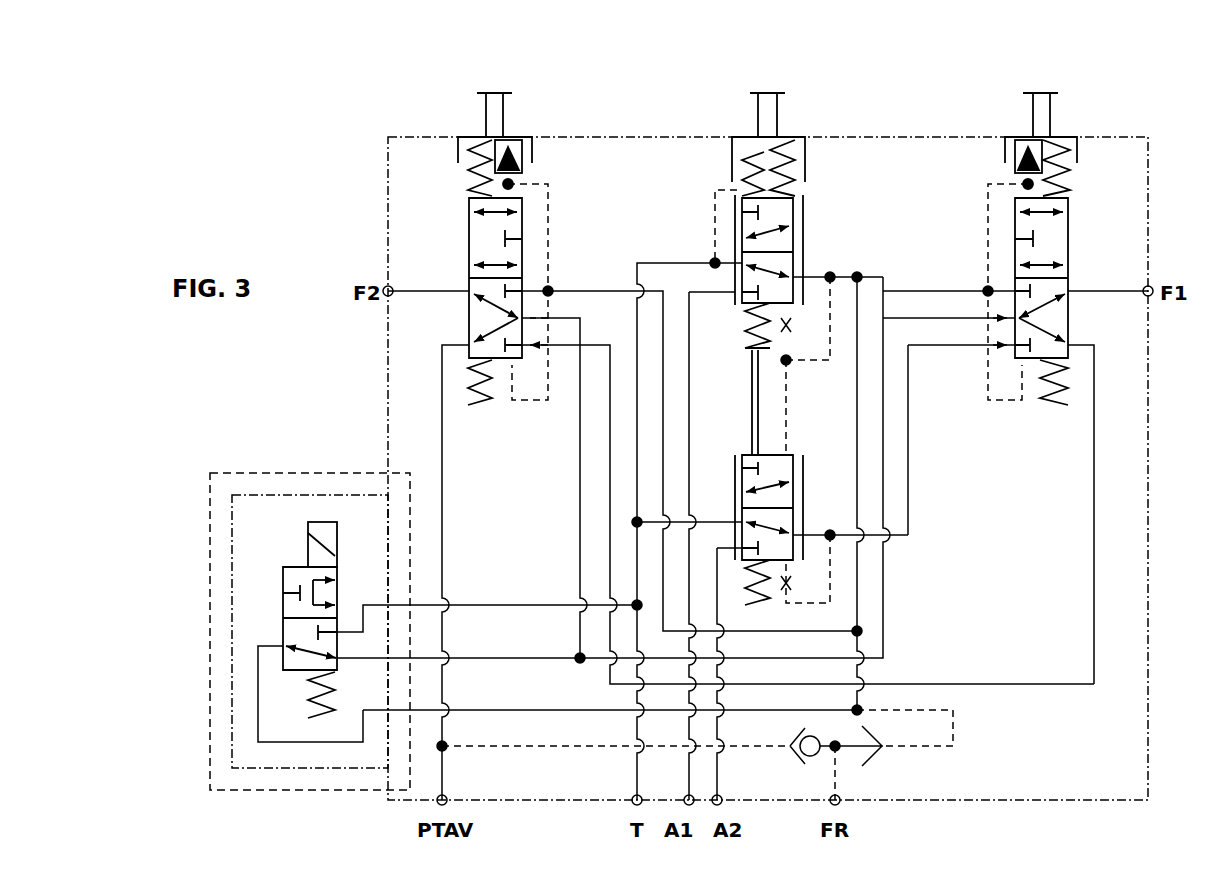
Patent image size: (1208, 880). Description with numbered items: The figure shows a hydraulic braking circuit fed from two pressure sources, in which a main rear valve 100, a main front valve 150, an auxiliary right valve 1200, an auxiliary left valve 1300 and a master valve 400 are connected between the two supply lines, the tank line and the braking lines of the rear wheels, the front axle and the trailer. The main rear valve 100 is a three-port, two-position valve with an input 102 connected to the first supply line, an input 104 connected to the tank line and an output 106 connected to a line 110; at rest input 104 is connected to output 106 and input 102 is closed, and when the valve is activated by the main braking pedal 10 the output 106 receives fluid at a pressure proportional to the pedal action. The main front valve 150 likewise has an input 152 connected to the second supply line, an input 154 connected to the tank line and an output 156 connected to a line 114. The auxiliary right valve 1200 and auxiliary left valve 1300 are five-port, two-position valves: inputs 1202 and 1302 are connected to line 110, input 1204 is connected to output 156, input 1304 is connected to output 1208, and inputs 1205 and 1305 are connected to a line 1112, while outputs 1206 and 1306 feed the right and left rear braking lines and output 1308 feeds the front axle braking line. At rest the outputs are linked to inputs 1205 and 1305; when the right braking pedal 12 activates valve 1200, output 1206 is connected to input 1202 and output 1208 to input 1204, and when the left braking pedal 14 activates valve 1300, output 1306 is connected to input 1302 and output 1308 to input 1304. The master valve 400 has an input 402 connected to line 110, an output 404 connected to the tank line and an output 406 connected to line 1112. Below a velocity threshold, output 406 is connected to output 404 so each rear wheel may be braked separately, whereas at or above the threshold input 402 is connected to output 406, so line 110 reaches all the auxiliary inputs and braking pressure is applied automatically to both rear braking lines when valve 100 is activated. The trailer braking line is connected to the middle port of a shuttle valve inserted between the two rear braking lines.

The left braking pedal 14 is at (497, 86).
The main braking pedal 10 is at (769, 86).
The right braking pedal 12 is at (1039, 86).
The auxiliary left valve 1300 is at (450, 225).
The input of auxiliary left valve 1305 is at (531, 312).
The output of auxiliary left valve 1306 is at (424, 290).
The output of auxiliary left valve 1308 is at (464, 345).
The input of auxiliary left valve 1302 is at (586, 291).
The input of auxiliary left valve 1304 is at (597, 345).
The input of main rear valve 104 is at (665, 262).
The main rear valve 100 is at (822, 240).
The output of main rear valve 106 is at (815, 277).
The input of main rear valve 102 is at (717, 297).
The main front valve 150 is at (814, 472).
The input of main front valve 154 is at (718, 520).
The output of main front valve 156 is at (818, 533).
The input of main front valve 152 is at (718, 607).
The line 110 is at (858, 598).
The line 1112 is at (884, 622).
The line 114 is at (910, 440).
The auxiliary right valve 1200 is at (1084, 240).
The input of auxiliary right valve 1202 is at (904, 290).
The input of auxiliary right valve 1205 is at (937, 317).
The input of auxiliary right valve 1204 is at (974, 348).
The output of auxiliary right valve 1206 is at (1103, 290).
The output of auxiliary right valve 1208 is at (1080, 344).
The master valve 400 is at (205, 626).
The input of master valve 402 is at (272, 645).
The output of master valve 404 is at (378, 603).
The output of master valve 406 is at (347, 660).